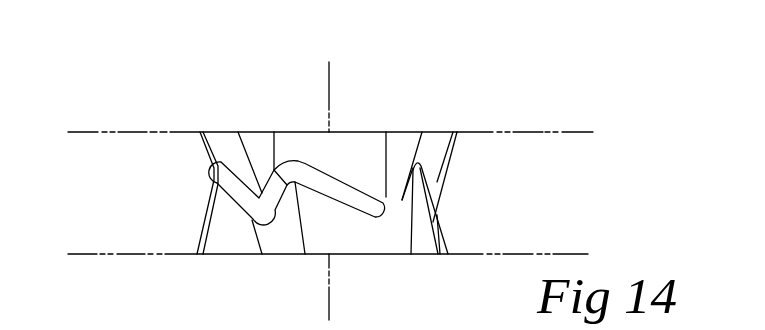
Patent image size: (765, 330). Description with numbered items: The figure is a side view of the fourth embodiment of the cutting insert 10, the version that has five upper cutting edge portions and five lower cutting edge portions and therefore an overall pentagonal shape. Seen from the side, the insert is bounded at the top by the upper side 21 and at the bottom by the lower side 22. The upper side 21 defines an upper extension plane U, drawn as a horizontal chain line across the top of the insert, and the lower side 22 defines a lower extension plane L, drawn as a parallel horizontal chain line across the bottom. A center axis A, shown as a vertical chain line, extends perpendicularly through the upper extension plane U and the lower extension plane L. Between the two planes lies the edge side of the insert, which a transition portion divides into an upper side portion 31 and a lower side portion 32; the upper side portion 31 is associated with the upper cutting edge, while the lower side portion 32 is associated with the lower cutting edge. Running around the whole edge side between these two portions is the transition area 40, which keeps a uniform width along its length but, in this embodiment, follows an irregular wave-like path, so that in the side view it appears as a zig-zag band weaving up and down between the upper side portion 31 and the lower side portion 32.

The cutting insert 10 is at (497, 104).
The upper side 21 is at (282, 132).
The lower side 22 is at (363, 254).
The upper side portion 31 is at (435, 143).
The lower side portion 32 is at (427, 235).
The transition area 40 is at (433, 203).
The center axis A is at (330, 90).
The upper extension plane U is at (129, 132).
The lower extension plane L is at (128, 256).